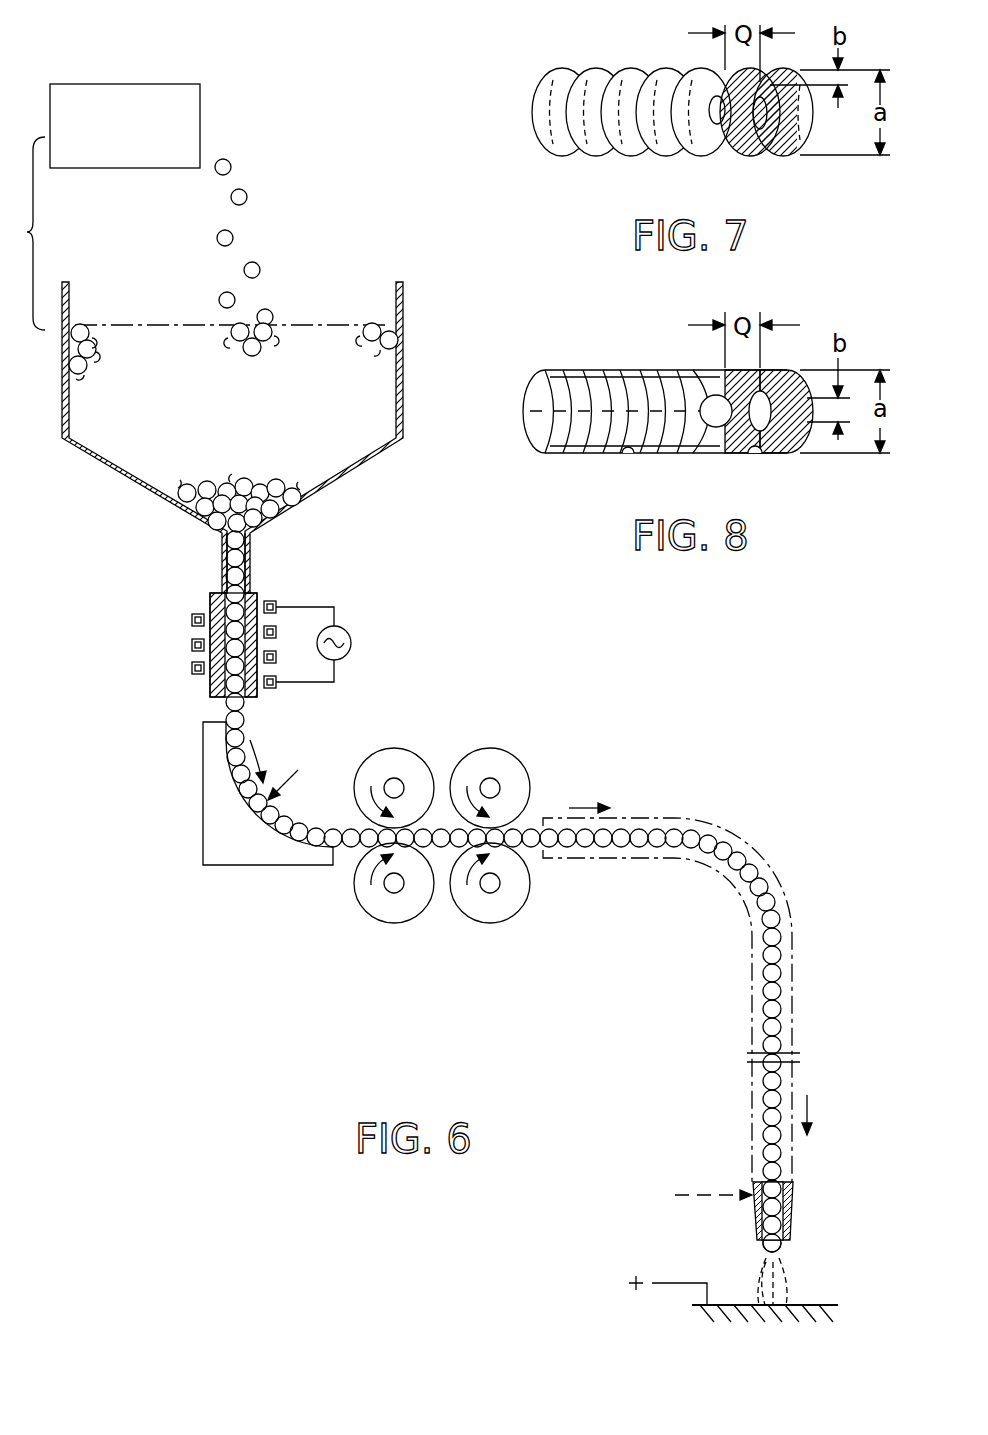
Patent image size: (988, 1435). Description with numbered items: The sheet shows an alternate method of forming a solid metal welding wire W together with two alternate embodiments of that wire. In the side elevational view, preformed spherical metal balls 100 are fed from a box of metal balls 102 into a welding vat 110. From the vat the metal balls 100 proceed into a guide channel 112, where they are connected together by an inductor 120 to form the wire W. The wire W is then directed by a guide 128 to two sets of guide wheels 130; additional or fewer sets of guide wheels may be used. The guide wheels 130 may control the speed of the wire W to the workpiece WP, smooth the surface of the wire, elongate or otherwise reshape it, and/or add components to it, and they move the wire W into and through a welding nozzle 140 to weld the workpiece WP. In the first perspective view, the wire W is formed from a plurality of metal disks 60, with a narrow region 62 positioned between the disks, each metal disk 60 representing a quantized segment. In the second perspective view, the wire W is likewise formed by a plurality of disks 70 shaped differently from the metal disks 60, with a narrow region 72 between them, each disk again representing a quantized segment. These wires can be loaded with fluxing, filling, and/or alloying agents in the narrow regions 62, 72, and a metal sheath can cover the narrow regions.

In FIG. 6, the box of metal balls 102 is at (200, 96).
In FIG. 6, the preformed spherical metal balls 100 is at (232, 237).
In FIG. 6, the welding vat 110 is at (118, 480).
In FIG. 6, the guide channel 112 is at (250, 563).
In FIG. 6, the inductor 120 is at (192, 645).
In FIG. 6, the guide 128 is at (215, 842).
In FIG. 6, the wire W is at (751, 1080).
In FIG. 7, the wire W is at (589, 52).
In FIG. 8, the wire W is at (595, 355).
In FIG. 6, the guide wheels 130 is at (468, 756).
In FIG. 6, the welding nozzle 140 is at (797, 1198).
In FIG. 6, the workpiece WP is at (812, 1303).
In FIG. 7, the metal disks 60 is at (688, 136).
In FIG. 7, the narrow region 62 is at (748, 152).
In FIG. 8, the disks 70 is at (668, 439).
In FIG. 8, the narrow region 72 is at (628, 442).